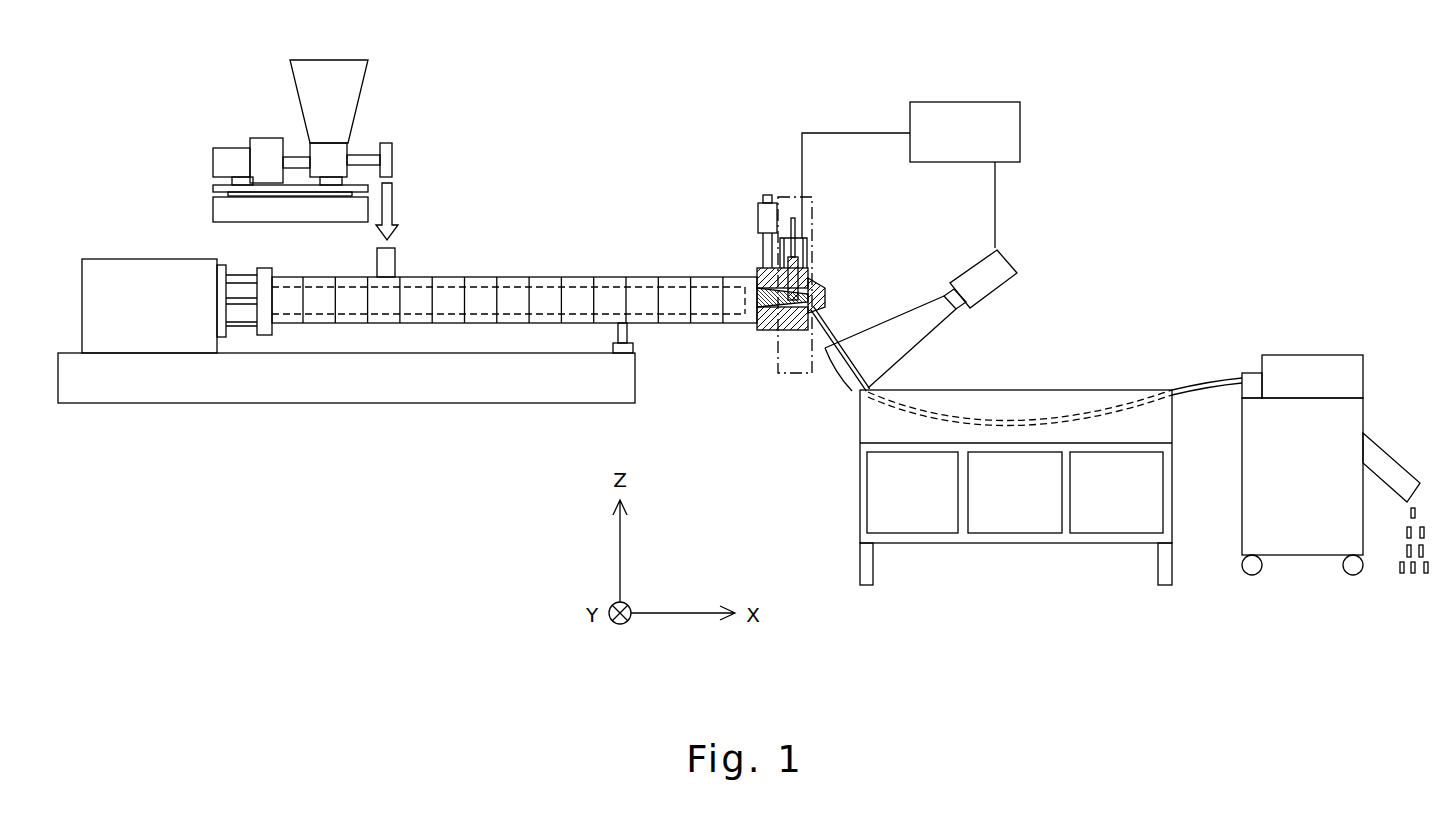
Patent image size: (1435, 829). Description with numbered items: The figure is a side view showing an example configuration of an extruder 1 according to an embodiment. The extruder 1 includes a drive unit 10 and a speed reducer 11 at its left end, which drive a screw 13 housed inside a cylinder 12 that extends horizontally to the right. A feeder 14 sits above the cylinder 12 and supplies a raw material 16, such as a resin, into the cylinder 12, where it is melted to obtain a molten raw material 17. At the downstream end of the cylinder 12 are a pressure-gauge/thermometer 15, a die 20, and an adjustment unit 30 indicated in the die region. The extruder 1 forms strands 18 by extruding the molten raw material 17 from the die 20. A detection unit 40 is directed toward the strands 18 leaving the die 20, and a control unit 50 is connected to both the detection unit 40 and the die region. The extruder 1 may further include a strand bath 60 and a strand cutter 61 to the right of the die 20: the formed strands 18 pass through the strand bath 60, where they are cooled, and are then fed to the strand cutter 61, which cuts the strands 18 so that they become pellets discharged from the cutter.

The extruder 1 is at (541, 47).
The drive unit 10 is at (97, 259).
The speed reducer 11 is at (177, 306).
The cylinder 12 is at (520, 277).
The screw 13 is at (578, 285).
The feeder 14 is at (360, 103).
The pressure-gauge/thermometer 15 is at (765, 190).
The raw material 16 is at (392, 207).
The molten raw material 17 is at (757, 305).
The strands 18 is at (837, 320).
The die 20 is at (828, 285).
The adjustment unit 30 is at (788, 373).
The detection unit 40 is at (1022, 272).
The control unit 50 is at (956, 143).
The strand bath 60 is at (1115, 390).
The strand cutter 61 is at (1298, 355).